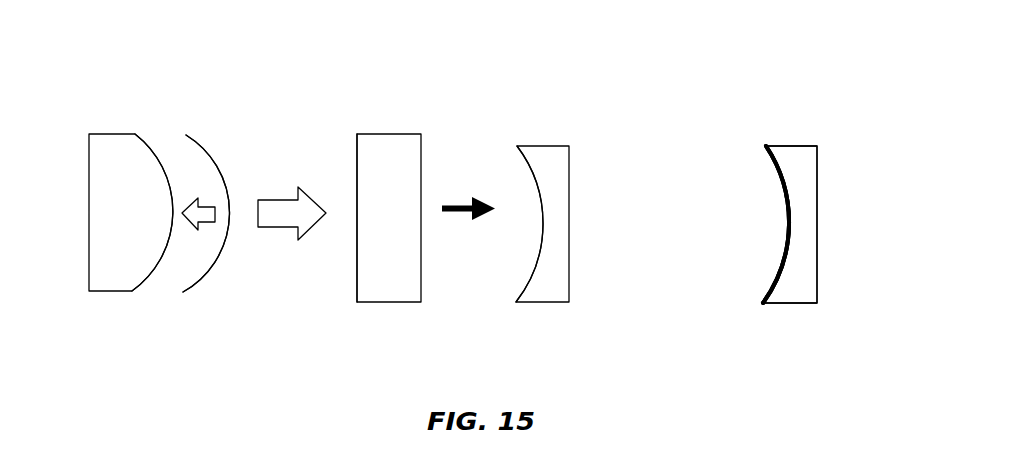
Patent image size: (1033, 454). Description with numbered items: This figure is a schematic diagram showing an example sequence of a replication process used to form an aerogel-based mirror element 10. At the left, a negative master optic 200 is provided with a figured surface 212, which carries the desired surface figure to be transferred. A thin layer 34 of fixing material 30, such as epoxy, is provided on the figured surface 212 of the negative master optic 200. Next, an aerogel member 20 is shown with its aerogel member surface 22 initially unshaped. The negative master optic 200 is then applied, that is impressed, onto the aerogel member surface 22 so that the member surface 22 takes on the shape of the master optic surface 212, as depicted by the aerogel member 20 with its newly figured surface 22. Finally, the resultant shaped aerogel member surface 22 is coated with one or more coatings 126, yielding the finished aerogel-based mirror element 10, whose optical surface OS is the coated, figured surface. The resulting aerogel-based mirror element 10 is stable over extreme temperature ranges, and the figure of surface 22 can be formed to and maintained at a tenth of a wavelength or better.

The negative master optic 200 is at (112, 135).
The figured surface 212 is at (143, 150).
The fixing material 30 is at (197, 150).
The thin layer 34 is at (208, 286).
The aerogel member 20 is at (405, 232).
The aerogel member surface 22 is at (357, 148).
The aerogel-based mirror element 10 is at (752, 78).
The coatings 126 is at (772, 198).
The optical surface OS is at (770, 244).